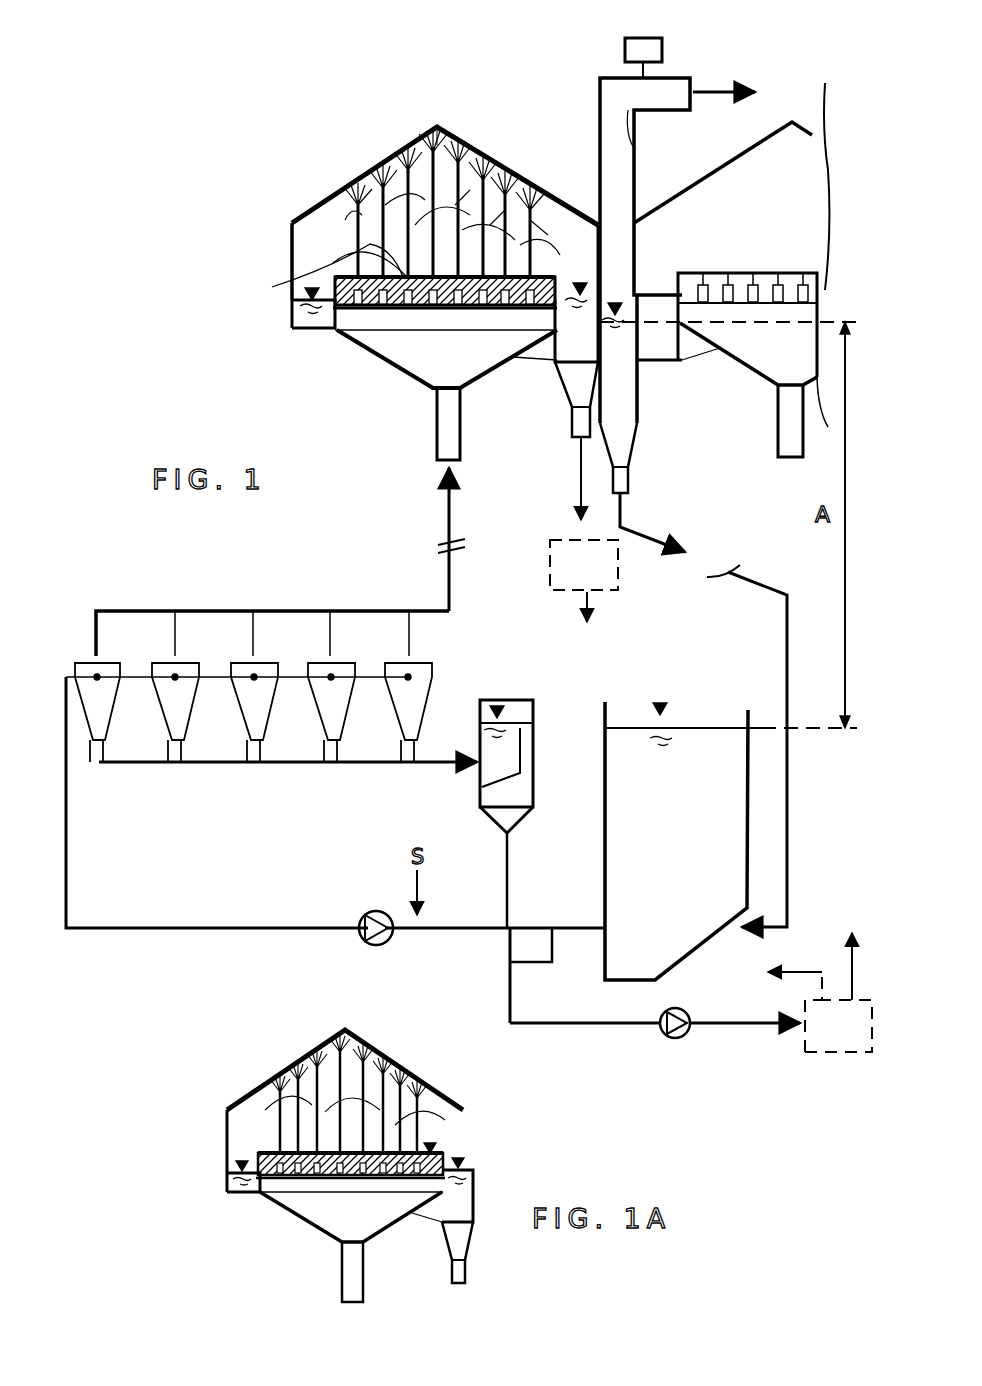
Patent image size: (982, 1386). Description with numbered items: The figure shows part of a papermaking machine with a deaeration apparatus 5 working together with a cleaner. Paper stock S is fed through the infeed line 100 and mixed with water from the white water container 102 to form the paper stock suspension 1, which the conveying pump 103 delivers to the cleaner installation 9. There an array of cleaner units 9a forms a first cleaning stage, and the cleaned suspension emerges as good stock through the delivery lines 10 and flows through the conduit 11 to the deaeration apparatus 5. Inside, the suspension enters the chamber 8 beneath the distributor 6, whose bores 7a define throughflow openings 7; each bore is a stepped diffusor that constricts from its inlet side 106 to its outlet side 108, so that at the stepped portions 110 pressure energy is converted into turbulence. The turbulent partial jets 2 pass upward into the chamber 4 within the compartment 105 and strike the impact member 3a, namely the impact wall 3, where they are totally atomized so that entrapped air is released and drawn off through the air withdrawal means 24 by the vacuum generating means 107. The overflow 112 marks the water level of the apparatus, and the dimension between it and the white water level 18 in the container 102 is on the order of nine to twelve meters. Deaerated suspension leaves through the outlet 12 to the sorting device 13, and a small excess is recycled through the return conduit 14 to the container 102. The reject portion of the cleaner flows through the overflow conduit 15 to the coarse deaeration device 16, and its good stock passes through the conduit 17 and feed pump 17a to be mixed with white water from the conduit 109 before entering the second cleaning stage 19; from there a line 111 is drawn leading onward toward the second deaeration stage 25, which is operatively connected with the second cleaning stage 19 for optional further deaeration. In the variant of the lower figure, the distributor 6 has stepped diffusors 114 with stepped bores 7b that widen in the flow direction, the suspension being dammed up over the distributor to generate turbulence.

In FIG. 1, the paper stock suspension 1 is at (450, 527).
In FIG. 1, the partial jets 2 is at (548, 172).
In FIG. 1A, the partial jets 2 is at (430, 1103).
In FIG. 1, the impact wall 3 is at (318, 203).
In FIG. 1A, the impact wall 3 is at (257, 1097).
In FIG. 1, the impact member 3a is at (370, 177).
In FIG. 1, the chamber 4 is at (330, 259).
In FIG. 1A, the chamber 4 is at (243, 1151).
In FIG. 1, the deaeration apparatus 5 is at (237, 175).
In FIG. 1A, the deaeration apparatus 5 is at (180, 1070).
In FIG. 1, the distributor 6 is at (348, 313).
In FIG. 1A, the distributor 6 is at (270, 1178).
In FIG. 1, the throughflow openings 7 is at (483, 313).
In FIG. 1A, the throughflow openings 7 is at (378, 1182).
In FIG. 1, the bores 7a is at (377, 310).
In FIG. 1A, the stepped bores 7b is at (337, 1178).
In FIG. 1, the chamber 8 is at (450, 366).
In FIG. 1A, the chamber 8 is at (357, 1223).
In FIG. 1, the cleaner installation 9 is at (200, 784).
In FIG. 1, the cleaner units 9a is at (94, 705).
In FIG. 1, the delivery lines 10 is at (409, 640).
In FIG. 1, the conduit 11 is at (180, 610).
In FIG. 1, the outlet 12 is at (578, 505).
In FIG. 1, the sorting device 13 is at (584, 581).
In FIG. 1, the return conduit 14 is at (652, 538).
In FIG. 1, the overflow conduit 15 is at (369, 766).
In FIG. 1, the coarse deaeration device 16 is at (525, 785).
In FIG. 1, the conduit 17 is at (627, 1028).
In FIG. 1, the feed pump 17a is at (685, 1037).
In FIG. 1, the white water level 18 is at (695, 725).
In FIG. 1, the second cleaning stage 19 is at (815, 999).
In FIG. 1, the air withdrawal means 24 is at (625, 160).
In FIG. 1, the second deaeration stage 25 is at (790, 178).
In FIG. 1, the stock infeed means 100 is at (417, 890).
In FIG. 1, the white water container 102 is at (603, 867).
In FIG. 1, the conveying pump 103 is at (362, 940).
In FIG. 1, the compartment 105 is at (308, 226).
In FIG. 1, the inlet side 106 is at (417, 313).
In FIG. 1, the vacuum generating means 107 is at (640, 50).
In FIG. 1, the outlet side 108 is at (316, 276).
In FIG. 1, the conduit 109 is at (537, 962).
In FIG. 1, the stepped portions 110 is at (457, 313).
In FIG. 1, the return line to chamber 25 111 is at (853, 960).
In FIG. 1, the overflow 112 is at (606, 300).
In FIG. 1A, the stepped diffusors 114 is at (295, 1178).